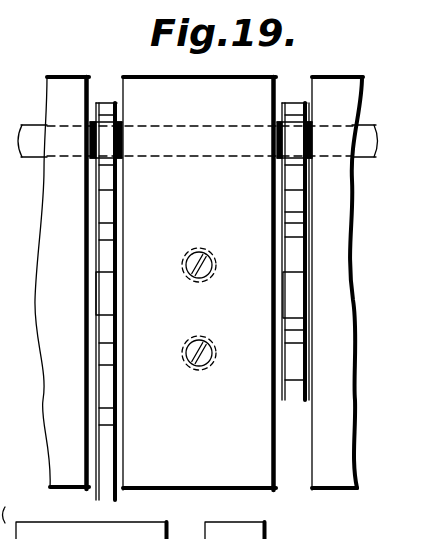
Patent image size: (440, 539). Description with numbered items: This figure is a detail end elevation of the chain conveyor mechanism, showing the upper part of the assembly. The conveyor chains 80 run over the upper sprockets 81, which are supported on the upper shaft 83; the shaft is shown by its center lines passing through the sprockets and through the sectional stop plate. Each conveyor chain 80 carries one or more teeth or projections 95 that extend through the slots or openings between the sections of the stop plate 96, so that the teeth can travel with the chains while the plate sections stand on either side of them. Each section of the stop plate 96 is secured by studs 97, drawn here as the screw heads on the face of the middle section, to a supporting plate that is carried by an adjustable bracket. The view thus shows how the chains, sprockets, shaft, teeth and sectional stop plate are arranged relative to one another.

The stop plate 96 is at (58, 88).
The upper shaft 83 is at (33, 148).
The conveyor chain 80 is at (115, 468).
The upper sprocket 81 is at (122, 123).
The tooth or projection 95 is at (107, 296).
The stud 97 is at (201, 248).